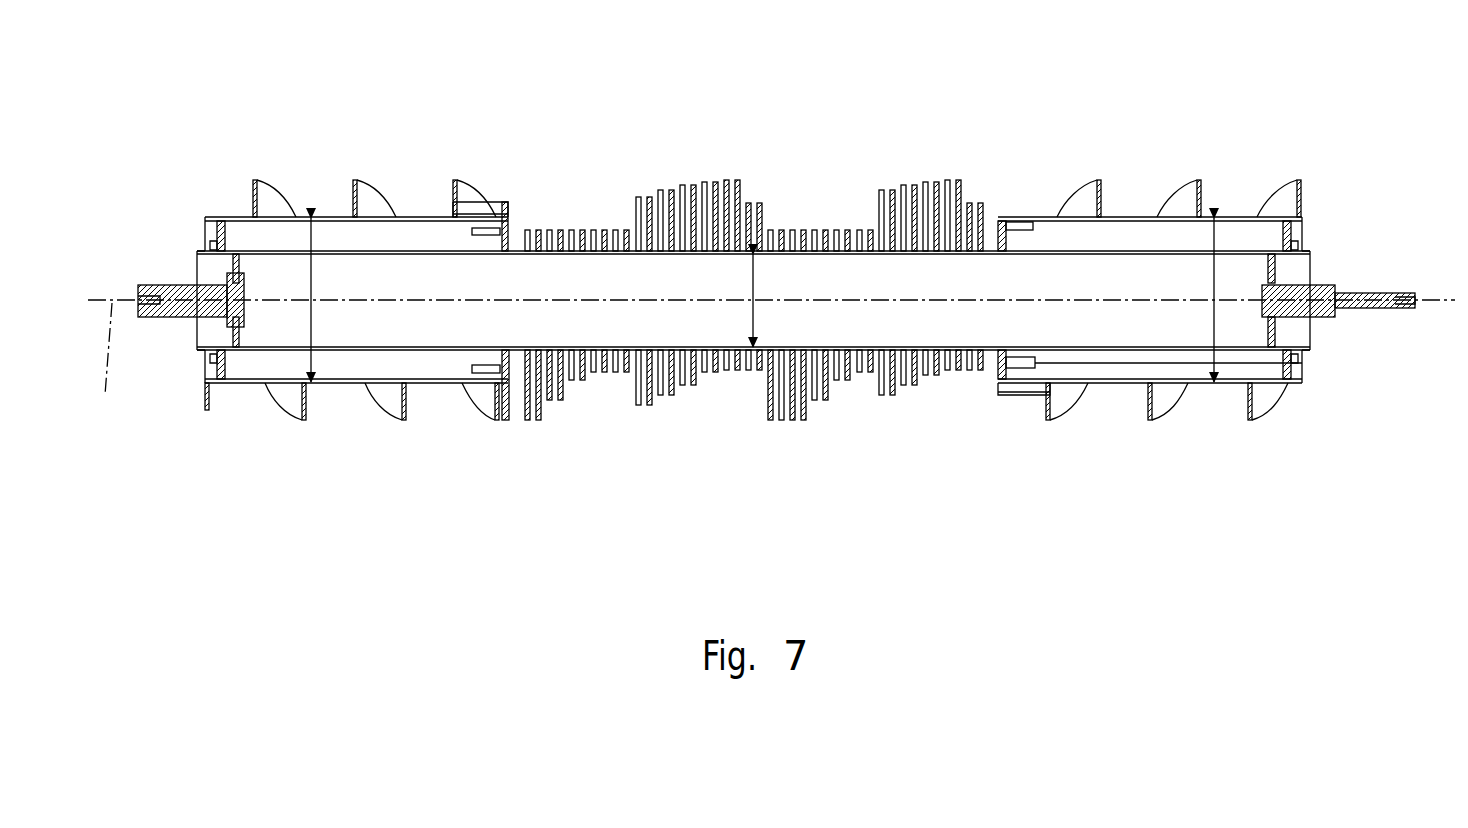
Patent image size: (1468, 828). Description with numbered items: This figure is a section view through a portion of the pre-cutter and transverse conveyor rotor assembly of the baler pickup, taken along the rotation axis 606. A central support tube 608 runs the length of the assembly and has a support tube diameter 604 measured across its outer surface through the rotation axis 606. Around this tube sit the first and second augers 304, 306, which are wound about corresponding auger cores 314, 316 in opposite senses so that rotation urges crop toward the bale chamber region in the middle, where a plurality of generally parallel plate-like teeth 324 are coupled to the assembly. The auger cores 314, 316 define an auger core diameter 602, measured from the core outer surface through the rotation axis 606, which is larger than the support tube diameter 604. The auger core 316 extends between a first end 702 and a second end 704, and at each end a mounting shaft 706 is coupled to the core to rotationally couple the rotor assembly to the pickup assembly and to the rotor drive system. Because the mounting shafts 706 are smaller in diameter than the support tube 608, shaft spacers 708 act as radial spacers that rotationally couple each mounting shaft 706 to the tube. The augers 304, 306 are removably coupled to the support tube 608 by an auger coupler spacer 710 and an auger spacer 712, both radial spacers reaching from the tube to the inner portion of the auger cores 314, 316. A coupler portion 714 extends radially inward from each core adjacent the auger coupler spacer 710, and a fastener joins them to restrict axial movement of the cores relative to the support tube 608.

The first auger 304 is at (336, 441).
The second auger 306 is at (1167, 433).
The first auger core 314 is at (437, 392).
The second auger core 316 is at (1108, 387).
The teeth 324 is at (737, 180).
The auger core diameter 602 is at (313, 278).
The support tube diameter 604 is at (753, 315).
The rotation axis 606 is at (769, 365).
The support tube 608 is at (953, 372).
The first end 702 is at (182, 353).
The second end 704 is at (1321, 353).
The mounting shaft 706 is at (158, 282).
The shaft spacer 708 is at (237, 328).
The auger coupler spacer 710 is at (225, 235).
The auger spacer 712 is at (478, 232).
The coupler portion 714 is at (217, 228).